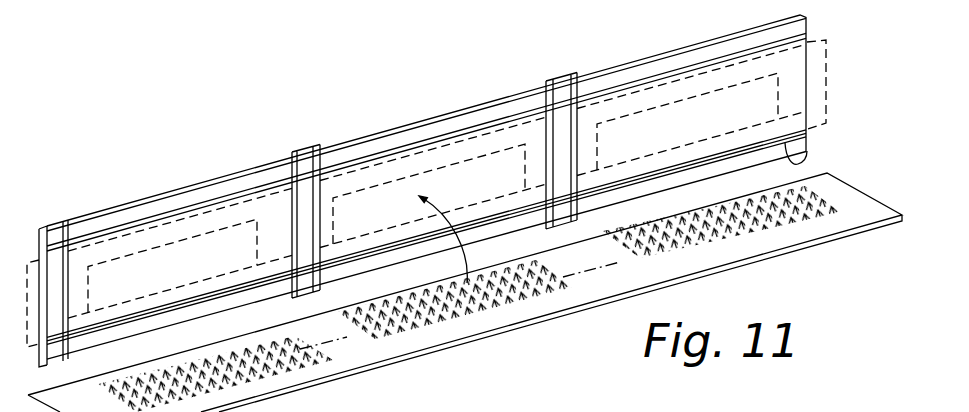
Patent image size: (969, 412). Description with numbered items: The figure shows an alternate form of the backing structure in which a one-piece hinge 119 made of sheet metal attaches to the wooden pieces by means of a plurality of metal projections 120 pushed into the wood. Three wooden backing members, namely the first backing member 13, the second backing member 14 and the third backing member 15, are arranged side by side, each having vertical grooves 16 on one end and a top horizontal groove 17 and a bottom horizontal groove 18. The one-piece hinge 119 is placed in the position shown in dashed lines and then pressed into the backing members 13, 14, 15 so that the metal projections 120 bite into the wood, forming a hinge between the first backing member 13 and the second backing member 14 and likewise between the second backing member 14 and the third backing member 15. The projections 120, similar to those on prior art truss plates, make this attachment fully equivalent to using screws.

The first backing member 13 is at (158, 207).
The second backing member 14 is at (460, 122).
The third backing member 15 is at (683, 62).
The vertical grooves 16 is at (580, 86).
The top horizontal groove 17 is at (620, 90).
The bottom horizontal groove 18 is at (808, 153).
The one-piece hinge 119 is at (355, 353).
The metal projections 120 is at (520, 308).